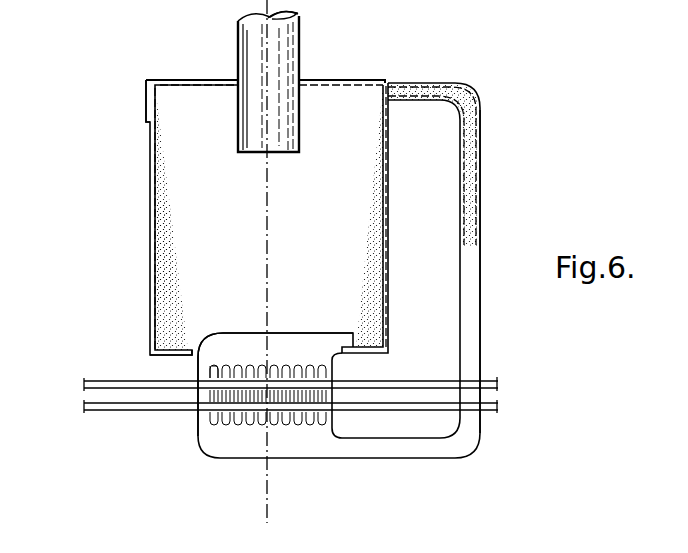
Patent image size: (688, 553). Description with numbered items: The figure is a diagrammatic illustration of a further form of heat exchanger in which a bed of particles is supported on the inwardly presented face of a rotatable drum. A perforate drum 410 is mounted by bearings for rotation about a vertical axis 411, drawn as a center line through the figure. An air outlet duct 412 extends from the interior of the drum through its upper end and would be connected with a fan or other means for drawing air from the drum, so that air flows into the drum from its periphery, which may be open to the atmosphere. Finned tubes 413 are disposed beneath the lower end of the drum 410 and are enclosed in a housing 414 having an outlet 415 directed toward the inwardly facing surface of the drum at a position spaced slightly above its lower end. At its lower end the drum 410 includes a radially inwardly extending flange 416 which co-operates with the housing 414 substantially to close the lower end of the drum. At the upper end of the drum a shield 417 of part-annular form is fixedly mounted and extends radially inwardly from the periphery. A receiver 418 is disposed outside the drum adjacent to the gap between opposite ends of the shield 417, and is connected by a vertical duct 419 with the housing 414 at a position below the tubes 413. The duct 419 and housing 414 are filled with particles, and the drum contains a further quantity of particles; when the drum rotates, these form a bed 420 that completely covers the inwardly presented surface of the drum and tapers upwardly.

The perforate drum 410 is at (148, 152).
The vertical axis 411 is at (276, 500).
The air outlet duct 412 is at (290, 52).
The finned tubes 413 is at (97, 370).
The housing 414 is at (236, 438).
The outlet 415 is at (357, 350).
The radially inwardly extending flange 416 is at (190, 357).
The shield 417 is at (176, 82).
The receiver 418 is at (410, 86).
The vertical duct 419 is at (482, 183).
The bed 420 is at (163, 230).